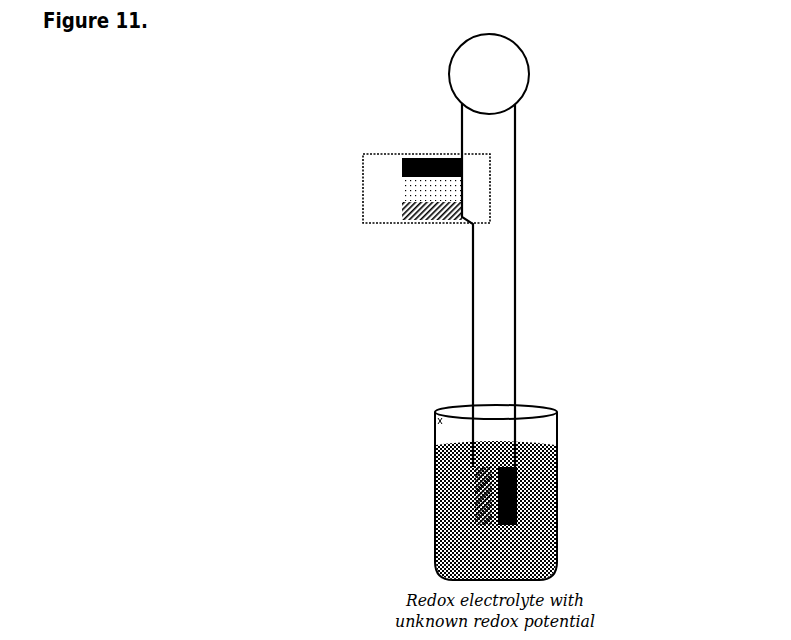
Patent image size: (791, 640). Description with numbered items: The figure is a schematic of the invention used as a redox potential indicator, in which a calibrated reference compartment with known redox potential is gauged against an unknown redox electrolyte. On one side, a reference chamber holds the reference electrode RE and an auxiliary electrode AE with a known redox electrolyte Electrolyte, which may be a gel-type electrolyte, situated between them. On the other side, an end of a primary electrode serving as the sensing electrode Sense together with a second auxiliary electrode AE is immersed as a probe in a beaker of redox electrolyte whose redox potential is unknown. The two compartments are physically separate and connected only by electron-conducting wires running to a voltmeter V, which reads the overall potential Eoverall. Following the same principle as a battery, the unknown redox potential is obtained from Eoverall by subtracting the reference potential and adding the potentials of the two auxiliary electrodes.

The voltmeter V is at (489, 74).
The overall potential Eoverall is at (569, 90).
The reference electrode RE is at (432, 167).
The redox electrolyte Electrolyte is at (430, 189).
The auxiliary electrode AE is at (447, 363).
The sensing electrode Sense is at (509, 496).